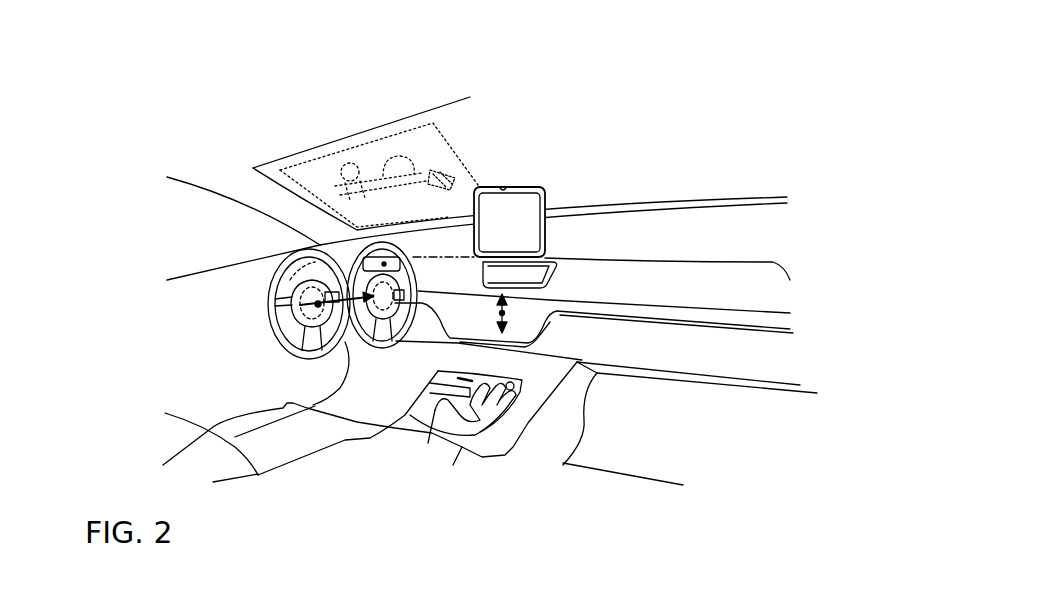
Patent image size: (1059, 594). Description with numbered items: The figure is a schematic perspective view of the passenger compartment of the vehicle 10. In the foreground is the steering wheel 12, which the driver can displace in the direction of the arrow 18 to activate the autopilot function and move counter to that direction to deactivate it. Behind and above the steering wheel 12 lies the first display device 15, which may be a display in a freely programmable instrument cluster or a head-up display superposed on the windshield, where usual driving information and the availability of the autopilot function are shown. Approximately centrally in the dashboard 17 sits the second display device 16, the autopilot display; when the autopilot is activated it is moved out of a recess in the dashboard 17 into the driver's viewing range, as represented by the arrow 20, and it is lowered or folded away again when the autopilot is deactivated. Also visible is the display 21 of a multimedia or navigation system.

The vehicle 10 is at (697, 108).
The steering wheel 12 is at (273, 326).
The first display device 15 is at (393, 260).
The second display device 16 is at (533, 273).
The dashboard 17 is at (708, 227).
The arrow 18 is at (310, 338).
The arrow 20 is at (462, 335).
The display 21 is at (537, 189).